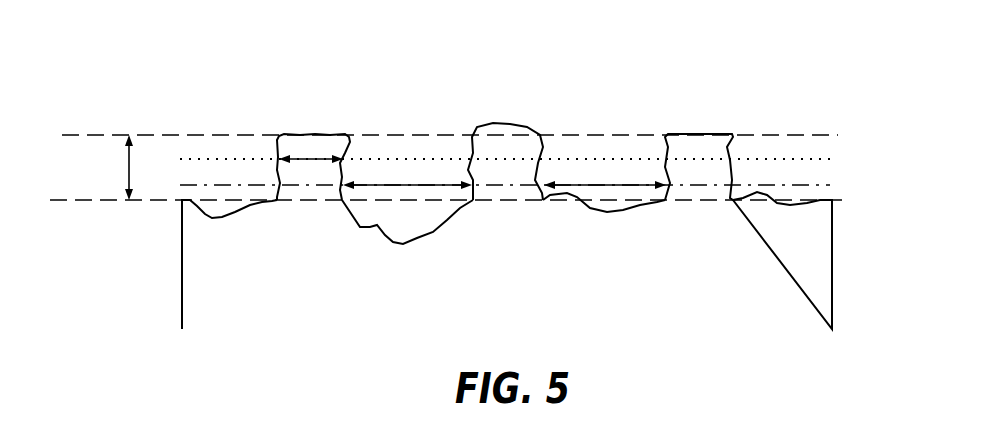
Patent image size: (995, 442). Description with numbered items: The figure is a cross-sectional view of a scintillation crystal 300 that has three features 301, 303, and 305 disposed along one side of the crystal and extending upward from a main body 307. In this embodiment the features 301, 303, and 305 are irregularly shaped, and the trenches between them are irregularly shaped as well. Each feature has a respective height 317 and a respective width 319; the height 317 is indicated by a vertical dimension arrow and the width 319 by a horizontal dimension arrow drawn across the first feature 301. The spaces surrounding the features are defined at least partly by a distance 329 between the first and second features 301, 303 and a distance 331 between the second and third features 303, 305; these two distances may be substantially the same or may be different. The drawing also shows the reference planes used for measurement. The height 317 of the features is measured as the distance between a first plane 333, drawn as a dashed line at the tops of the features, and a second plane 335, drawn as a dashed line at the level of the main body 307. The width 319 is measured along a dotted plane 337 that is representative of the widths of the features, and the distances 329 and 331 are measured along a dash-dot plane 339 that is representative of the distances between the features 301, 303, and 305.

The scintillation crystal 300 is at (176, 78).
The feature 301 is at (313, 133).
The feature 303 is at (510, 124).
The feature 305 is at (702, 133).
The main body 307 is at (832, 275).
The height 317 is at (126, 176).
The width 319 is at (312, 160).
The distance 329 is at (397, 183).
The distance 331 is at (607, 183).
The first plane 333 is at (102, 135).
The second plane 335 is at (102, 200).
The plane 337 is at (818, 160).
The plane 339 is at (830, 187).